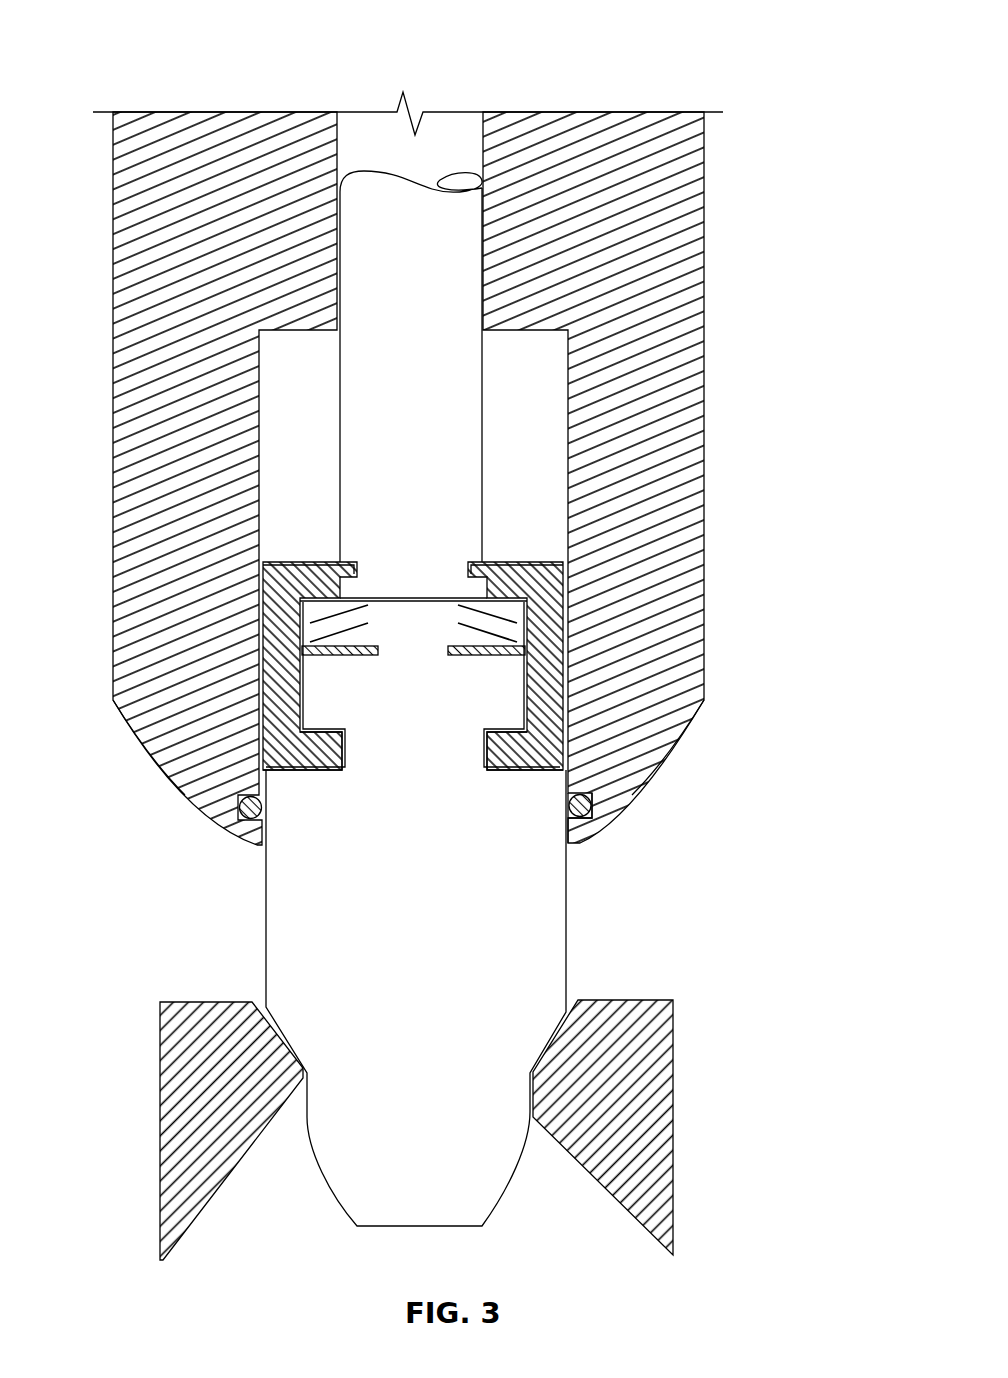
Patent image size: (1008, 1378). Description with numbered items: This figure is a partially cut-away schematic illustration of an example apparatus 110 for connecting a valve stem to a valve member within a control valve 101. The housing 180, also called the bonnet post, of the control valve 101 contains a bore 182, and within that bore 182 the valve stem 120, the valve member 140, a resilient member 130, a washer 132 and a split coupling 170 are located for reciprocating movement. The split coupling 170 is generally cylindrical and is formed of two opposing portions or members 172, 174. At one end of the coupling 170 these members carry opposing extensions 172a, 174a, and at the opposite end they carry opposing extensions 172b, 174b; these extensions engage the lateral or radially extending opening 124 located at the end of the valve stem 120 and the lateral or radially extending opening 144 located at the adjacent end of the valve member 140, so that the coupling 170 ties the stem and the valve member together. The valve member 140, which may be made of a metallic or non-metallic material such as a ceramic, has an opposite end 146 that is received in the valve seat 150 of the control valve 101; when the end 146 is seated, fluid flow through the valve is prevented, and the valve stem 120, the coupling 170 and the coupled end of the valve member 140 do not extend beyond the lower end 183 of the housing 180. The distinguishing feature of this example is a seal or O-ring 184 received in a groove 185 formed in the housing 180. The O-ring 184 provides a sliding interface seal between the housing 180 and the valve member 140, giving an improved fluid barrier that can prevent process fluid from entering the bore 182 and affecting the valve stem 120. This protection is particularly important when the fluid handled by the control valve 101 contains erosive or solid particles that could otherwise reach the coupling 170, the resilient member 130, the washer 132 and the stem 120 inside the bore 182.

The apparatus 110 is at (138, 50).
The control valve 101 is at (180, 918).
The valve stem 120 is at (458, 218).
The radially extending opening 124 is at (341, 560).
The resilient member 130 is at (490, 620).
The washer 132 is at (487, 648).
The valve member 140 is at (550, 893).
The radially extending opening 144 is at (573, 790).
The opposite end 146 is at (495, 1163).
The valve seat 150 is at (635, 1000).
The split coupling 170 is at (545, 722).
The coupling member 172 is at (280, 657).
The extension 172a is at (288, 564).
The extension 172b is at (328, 757).
The coupling member 174 is at (552, 663).
The extension 174a is at (472, 567).
The extension 174b is at (500, 757).
The housing 180 is at (694, 410).
The bore 182 is at (452, 128).
The lower end 183 is at (195, 762).
The O-ring 184 is at (590, 822).
The groove 185 is at (637, 787).